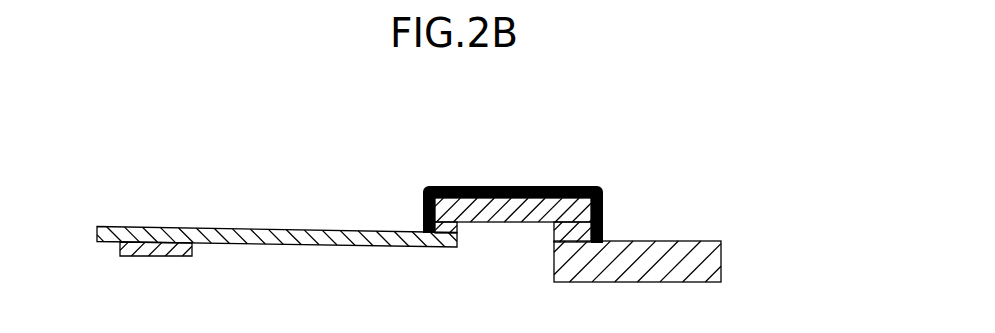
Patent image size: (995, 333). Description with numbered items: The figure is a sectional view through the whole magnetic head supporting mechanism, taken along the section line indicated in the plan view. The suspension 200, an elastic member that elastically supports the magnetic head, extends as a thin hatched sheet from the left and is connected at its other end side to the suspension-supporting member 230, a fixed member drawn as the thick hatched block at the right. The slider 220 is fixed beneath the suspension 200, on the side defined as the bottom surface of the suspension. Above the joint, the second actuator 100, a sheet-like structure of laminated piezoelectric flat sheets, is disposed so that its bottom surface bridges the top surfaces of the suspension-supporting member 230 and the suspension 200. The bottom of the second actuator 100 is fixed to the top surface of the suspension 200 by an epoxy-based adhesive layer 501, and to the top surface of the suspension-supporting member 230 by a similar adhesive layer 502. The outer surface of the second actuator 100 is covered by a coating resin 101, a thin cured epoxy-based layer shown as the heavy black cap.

The second actuator 100 is at (565, 190).
The coating resin 101 is at (482, 186).
The suspension 200 is at (153, 228).
The slider 220 is at (147, 257).
The suspension-supporting member 230 is at (713, 265).
The adhesive layer 501 is at (459, 228).
The adhesive layer 502 is at (603, 228).